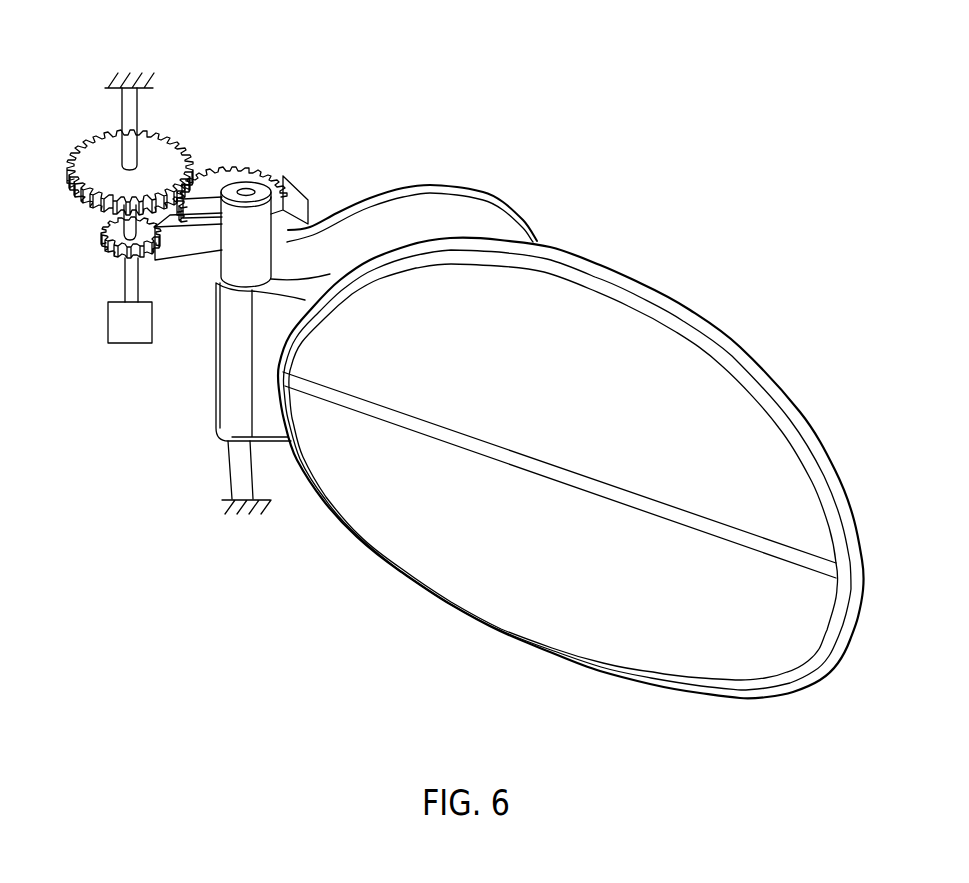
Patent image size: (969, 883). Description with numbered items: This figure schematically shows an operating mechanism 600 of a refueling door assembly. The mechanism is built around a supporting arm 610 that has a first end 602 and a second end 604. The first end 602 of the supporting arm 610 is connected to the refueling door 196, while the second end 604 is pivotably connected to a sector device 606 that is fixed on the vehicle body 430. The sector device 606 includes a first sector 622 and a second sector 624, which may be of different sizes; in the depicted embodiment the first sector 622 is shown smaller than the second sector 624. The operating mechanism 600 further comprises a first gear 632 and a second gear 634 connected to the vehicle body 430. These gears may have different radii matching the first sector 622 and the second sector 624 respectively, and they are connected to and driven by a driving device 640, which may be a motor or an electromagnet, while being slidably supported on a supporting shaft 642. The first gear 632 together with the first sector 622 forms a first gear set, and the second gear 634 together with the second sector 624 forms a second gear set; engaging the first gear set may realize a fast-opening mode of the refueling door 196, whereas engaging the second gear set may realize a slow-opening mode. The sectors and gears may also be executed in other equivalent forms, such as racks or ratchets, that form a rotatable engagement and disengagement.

The refueling door 196 is at (797, 653).
The vehicle body 430 is at (150, 88).
The operating mechanism 600 is at (318, 97).
The first end 602 is at (540, 244).
The second end 604 is at (312, 228).
The sector device 606 is at (287, 185).
The supporting arm 610 is at (484, 193).
The first sector 622 is at (231, 172).
The second sector 624 is at (185, 263).
The first gear 632 is at (69, 183).
The second gear 634 is at (102, 236).
The driving device 640 is at (109, 336).
The supporting shaft 642 is at (126, 282).